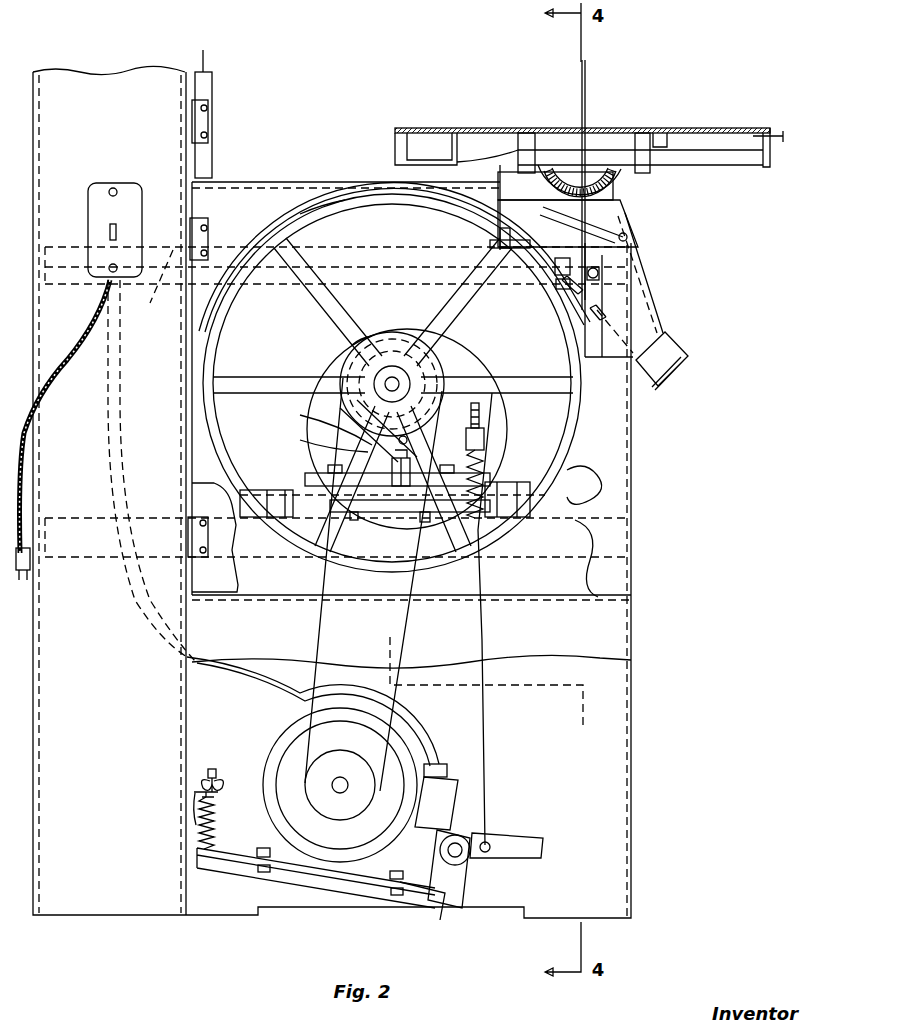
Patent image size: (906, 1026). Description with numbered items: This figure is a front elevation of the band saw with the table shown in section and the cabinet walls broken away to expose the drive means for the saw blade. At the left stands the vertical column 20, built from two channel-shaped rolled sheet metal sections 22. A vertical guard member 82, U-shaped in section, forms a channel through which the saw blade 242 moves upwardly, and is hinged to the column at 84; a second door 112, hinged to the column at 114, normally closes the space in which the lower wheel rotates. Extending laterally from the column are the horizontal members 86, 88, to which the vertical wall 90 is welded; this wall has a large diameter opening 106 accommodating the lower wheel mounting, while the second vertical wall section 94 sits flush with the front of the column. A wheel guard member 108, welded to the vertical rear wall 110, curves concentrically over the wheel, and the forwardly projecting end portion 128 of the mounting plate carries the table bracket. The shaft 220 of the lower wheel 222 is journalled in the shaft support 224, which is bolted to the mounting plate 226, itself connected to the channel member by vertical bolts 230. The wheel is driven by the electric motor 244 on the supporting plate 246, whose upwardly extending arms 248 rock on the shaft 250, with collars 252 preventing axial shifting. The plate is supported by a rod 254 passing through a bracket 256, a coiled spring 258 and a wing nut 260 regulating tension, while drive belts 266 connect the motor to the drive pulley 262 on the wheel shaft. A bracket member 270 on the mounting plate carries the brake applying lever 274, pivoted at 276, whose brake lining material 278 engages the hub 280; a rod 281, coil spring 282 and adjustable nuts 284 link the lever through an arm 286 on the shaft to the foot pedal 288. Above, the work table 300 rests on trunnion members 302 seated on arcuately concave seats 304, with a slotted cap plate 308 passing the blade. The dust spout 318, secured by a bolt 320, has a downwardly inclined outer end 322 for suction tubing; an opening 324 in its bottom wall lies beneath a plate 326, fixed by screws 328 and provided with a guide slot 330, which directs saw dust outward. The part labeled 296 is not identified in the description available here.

The vertical column 20 is at (72, 66).
The rolled sheet metal sections 22 is at (108, 134).
The vertical guard member 82 is at (208, 96).
The hinge 84 is at (190, 126).
The horizontal member 86 is at (94, 415).
The horizontal member 88 is at (262, 550).
The vertical wall 90 is at (282, 344).
The second vertical wall section 94 is at (578, 655).
The large diameter opening 106 is at (363, 443).
The wheel guard member 108 is at (372, 185).
The vertical rear wall 110 is at (312, 200).
The second door 112 is at (215, 205).
The hinge 114 is at (190, 234).
The forwardly projecting end portion 128 is at (490, 245).
The shaft 220 is at (412, 331).
The lower wheel 222 is at (300, 214).
The shaft support 224 is at (340, 442).
The mounting plate 226 is at (425, 520).
The vertical bolts 230 is at (322, 560).
The saw blade 242 is at (210, 318).
The electric motor 244 is at (388, 770).
The supporting plate 246 is at (276, 858).
The upwardly extending arms 248 is at (436, 888).
The shaft 250 is at (467, 868).
The collars 252 is at (490, 838).
The rod 254 is at (206, 774).
The bracket 256 is at (214, 794).
The coiled spring 258 is at (205, 815).
The wing nut 260 is at (218, 772).
The drive pulley 262 is at (430, 350).
The drive belts 266 is at (406, 607).
The bracket member 270 is at (385, 512).
The brake applying lever 274 is at (445, 400).
The pivot 276 is at (390, 478).
The brake lining material 278 is at (330, 423).
The hub 280 is at (347, 370).
The rod 281 is at (492, 393).
The coil spring 282 is at (488, 462).
The adjustable nuts 284 is at (486, 420).
The arm 286 is at (490, 858).
The foot pedal 288 is at (525, 845).
The bolt 296 is at (558, 267).
The work table 300 is at (497, 127).
The trunnion members 302 is at (608, 143).
The arcuately concave seats 304 is at (615, 175).
The slotted cap plate 308 is at (581, 126).
The dust spout 318 is at (632, 258).
The bolt 320 is at (650, 256).
The downwardly inclined outer end 322 is at (688, 350).
The opening 324 is at (568, 292).
The plate 326 is at (612, 312).
The screws 328 is at (556, 290).
The guide slot 330 is at (600, 283).